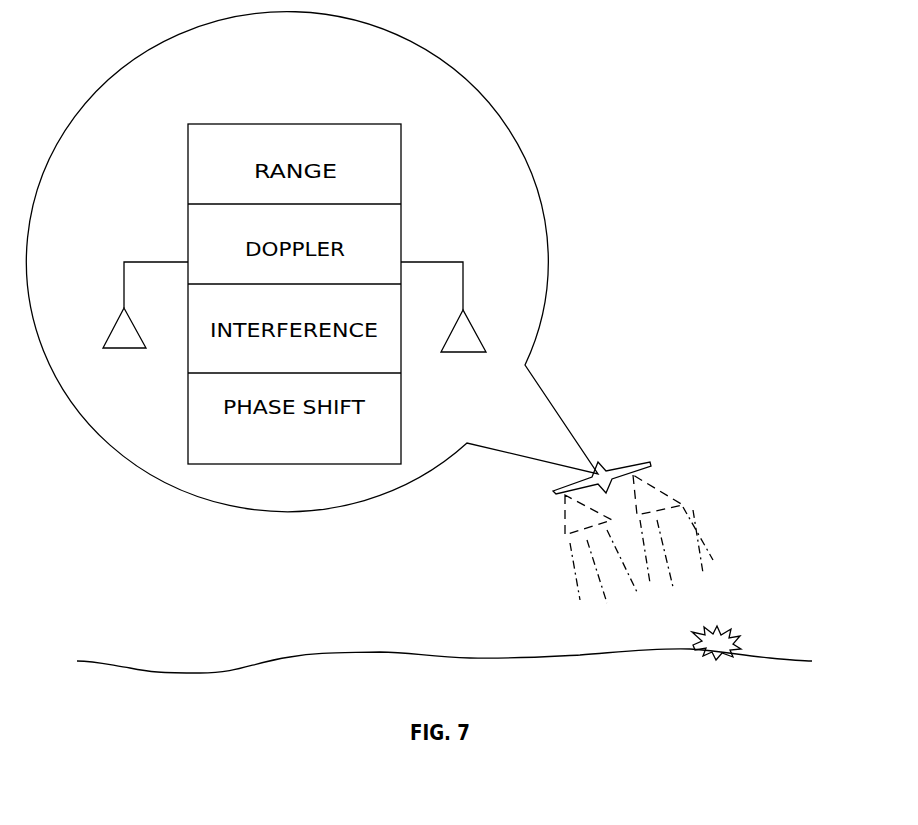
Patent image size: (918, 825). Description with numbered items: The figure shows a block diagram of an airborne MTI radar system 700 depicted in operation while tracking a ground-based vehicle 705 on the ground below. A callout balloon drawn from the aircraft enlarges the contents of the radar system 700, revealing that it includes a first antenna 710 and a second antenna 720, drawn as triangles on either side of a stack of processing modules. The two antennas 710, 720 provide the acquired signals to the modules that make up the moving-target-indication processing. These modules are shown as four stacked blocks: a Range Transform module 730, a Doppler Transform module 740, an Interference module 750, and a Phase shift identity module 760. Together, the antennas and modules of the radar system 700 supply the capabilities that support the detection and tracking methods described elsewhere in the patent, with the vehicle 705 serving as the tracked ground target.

The airborne MTI radar system 700 is at (614, 461).
The ground-based vehicle 705 is at (726, 620).
The first antenna 710 is at (117, 330).
The second antenna 720 is at (468, 330).
The Range Transform module 730 is at (197, 163).
The Doppler Transform module 740 is at (398, 237).
The Interference module 750 is at (200, 350).
The Phase shift identity module 760 is at (397, 430).